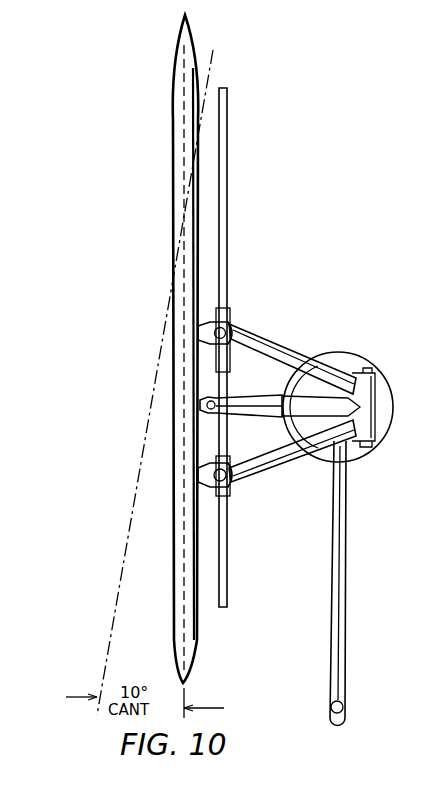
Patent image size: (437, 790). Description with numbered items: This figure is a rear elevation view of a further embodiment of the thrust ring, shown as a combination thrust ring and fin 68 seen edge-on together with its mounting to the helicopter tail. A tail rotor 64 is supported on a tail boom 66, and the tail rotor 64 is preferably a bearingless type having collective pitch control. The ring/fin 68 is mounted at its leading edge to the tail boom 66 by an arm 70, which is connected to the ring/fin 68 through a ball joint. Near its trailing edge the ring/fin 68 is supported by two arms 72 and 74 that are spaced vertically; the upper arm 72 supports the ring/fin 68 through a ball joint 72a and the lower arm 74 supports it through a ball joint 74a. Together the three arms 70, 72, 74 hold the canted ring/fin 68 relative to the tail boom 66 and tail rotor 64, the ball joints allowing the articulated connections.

The tail rotor 64 is at (223, 252).
The tail boom 66 is at (370, 366).
The combination thrust ring and fin 68 is at (172, 205).
The arm 70 is at (268, 398).
The arm 72 is at (290, 354).
The ball joint 72a is at (232, 326).
The arm 74 is at (270, 460).
The ball joint 74a is at (232, 482).